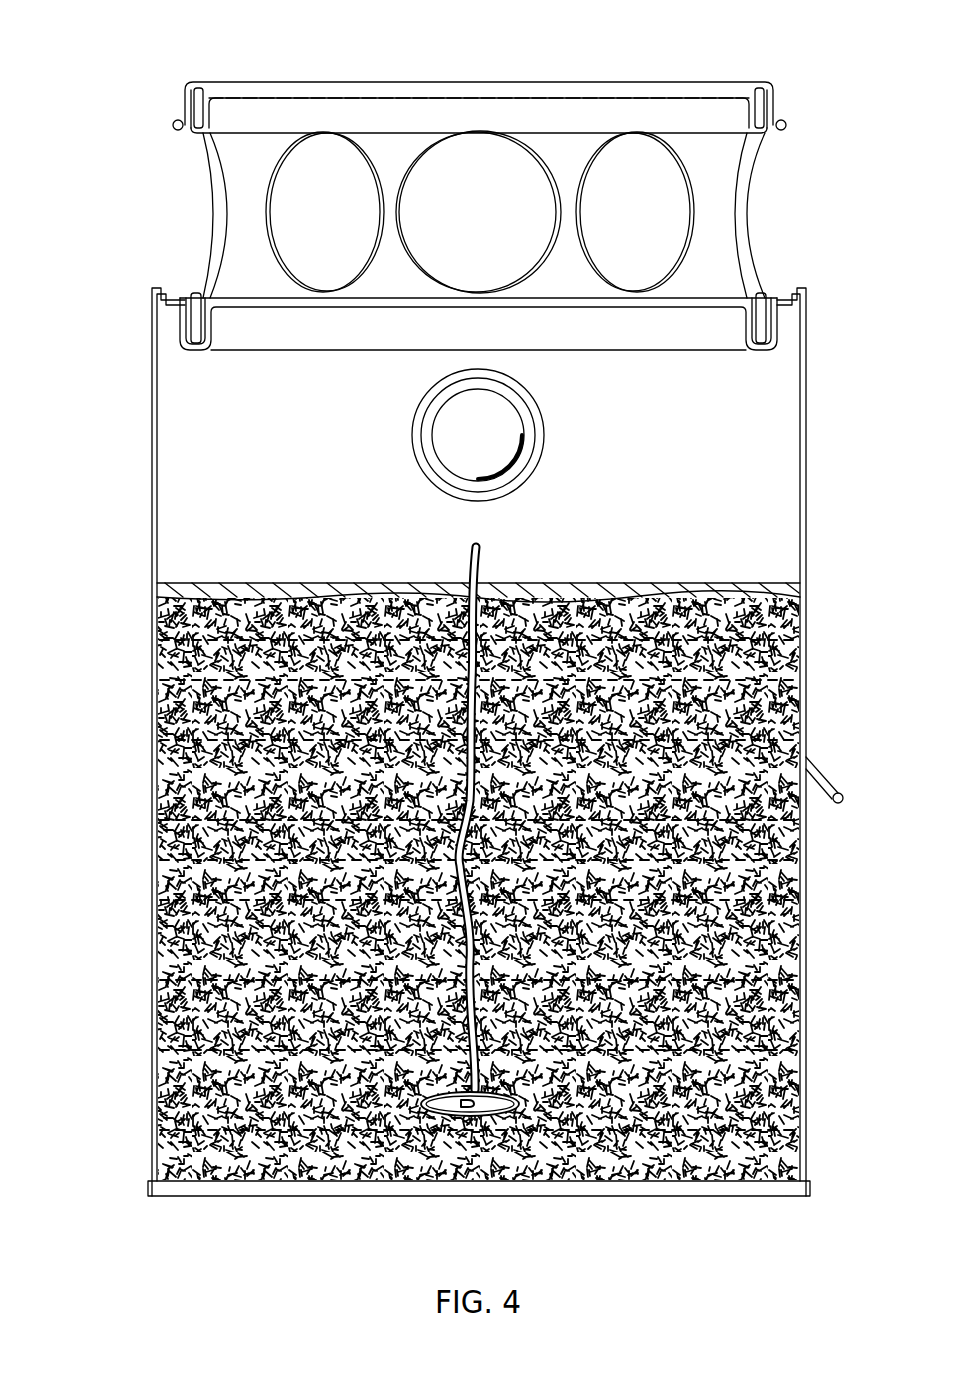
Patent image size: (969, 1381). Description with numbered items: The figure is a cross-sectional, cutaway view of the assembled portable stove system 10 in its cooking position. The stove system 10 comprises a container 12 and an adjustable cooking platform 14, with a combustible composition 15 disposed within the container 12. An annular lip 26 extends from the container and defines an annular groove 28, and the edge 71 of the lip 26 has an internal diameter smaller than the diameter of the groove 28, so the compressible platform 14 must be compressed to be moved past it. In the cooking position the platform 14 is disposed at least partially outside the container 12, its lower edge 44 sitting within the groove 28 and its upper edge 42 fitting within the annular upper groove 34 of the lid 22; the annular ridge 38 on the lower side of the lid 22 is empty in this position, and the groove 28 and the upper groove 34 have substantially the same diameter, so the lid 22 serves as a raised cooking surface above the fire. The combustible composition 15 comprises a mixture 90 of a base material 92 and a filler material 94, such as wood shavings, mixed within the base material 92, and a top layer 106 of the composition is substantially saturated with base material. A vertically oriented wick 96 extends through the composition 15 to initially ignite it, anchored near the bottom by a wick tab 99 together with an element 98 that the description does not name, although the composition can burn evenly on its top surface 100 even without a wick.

The portable stove system 10 is at (111, 118).
The container 12 is at (808, 484).
The adjustable cooking platform 14 is at (767, 212).
The combustible composition 15 is at (762, 567).
The lid 22 is at (492, 85).
The annular lip 26 is at (197, 300).
The annular groove 28 is at (193, 352).
The annular upper groove 34 is at (207, 87).
The annular ridge 38 is at (620, 83).
The upper edge 42 is at (778, 85).
The lower edge 44 is at (780, 353).
The edge of lip 71 is at (571, 300).
The mixture 90 is at (740, 723).
The base material 92 is at (718, 658).
The filler material 94 is at (777, 846).
The wick 96 is at (488, 585).
The disk 98 is at (500, 1086).
The wick tab 99 is at (505, 1108).
The top surface 100 is at (328, 585).
The top layer 106 is at (154, 592).